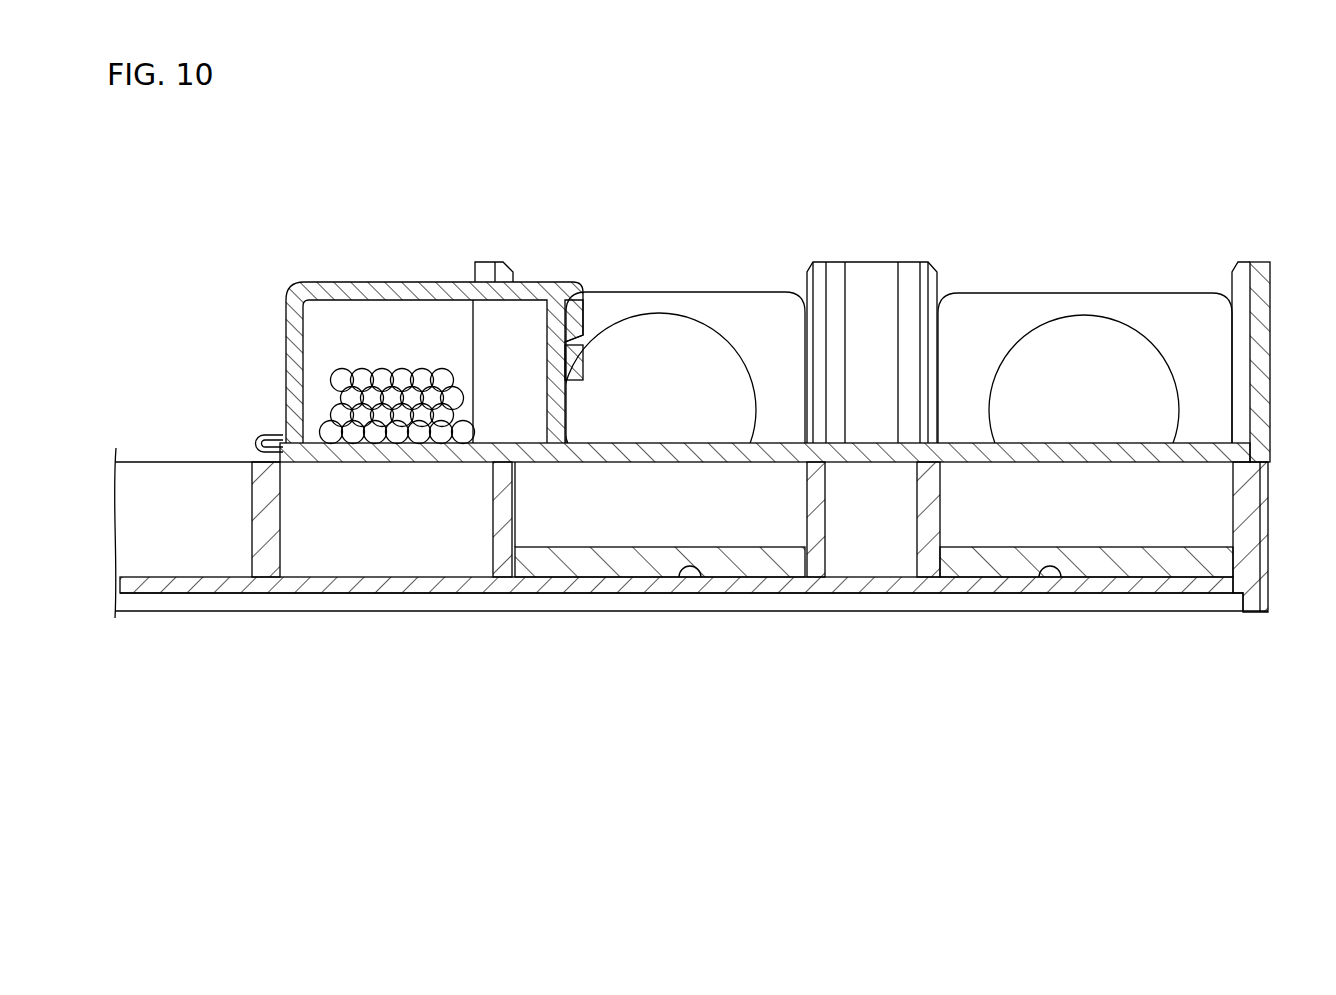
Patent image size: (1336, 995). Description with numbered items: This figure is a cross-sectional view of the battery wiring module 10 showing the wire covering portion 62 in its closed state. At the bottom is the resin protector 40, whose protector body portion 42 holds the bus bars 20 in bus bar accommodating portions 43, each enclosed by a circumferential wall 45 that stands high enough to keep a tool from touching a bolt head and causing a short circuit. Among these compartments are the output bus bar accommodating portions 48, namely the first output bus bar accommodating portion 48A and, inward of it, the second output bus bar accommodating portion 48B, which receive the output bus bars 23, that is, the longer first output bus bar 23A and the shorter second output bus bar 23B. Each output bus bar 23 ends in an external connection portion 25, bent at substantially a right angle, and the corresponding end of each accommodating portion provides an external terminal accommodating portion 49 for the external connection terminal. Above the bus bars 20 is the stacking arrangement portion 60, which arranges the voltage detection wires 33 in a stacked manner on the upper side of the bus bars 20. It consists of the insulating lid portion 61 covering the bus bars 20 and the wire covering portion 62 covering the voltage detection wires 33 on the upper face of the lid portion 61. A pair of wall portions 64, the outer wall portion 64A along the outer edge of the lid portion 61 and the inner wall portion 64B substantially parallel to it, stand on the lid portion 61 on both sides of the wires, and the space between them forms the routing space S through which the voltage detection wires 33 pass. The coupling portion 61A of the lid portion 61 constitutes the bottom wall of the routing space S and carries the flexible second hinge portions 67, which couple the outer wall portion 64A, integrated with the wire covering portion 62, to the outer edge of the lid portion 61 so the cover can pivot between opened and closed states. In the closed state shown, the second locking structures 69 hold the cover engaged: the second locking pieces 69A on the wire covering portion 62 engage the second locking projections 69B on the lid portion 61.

The battery wiring module 10 is at (868, 156).
The bus bars 20 is at (615, 558).
The output bus bars 23 is at (874, 641).
The first output bus bar 23A is at (975, 562).
The second output bus bar 23B is at (757, 562).
The external connection portion 25 is at (1005, 312).
The voltage detection wires 33 is at (380, 378).
The resin protector 40 is at (308, 583).
The protector body portion 42 is at (372, 583).
The bus bar accommodating portions 43 is at (517, 507).
The circumferential wall 45 is at (1243, 507).
The output bus bar accommodating portions 48 is at (870, 715).
The first output bus bar accommodating portion 48A is at (1047, 565).
The second output bus bar accommodating portion 48B is at (707, 568).
The external terminal accommodating portion 49 is at (1240, 342).
The stacking arrangement portion 60 is at (795, 443).
The lid portion 61 is at (880, 443).
The coupling portion 61A is at (407, 453).
The wire covering portion 62 is at (442, 285).
The wall portions 64 is at (368, 371).
The outer wall portion 64A is at (295, 357).
The inner wall portion 64B is at (548, 393).
The second hinge portions 67 is at (255, 443).
The second locking structures 69 is at (621, 268).
The second locking pieces 69A is at (581, 363).
The second locking projections 69B is at (581, 320).
The routing space S is at (408, 341).